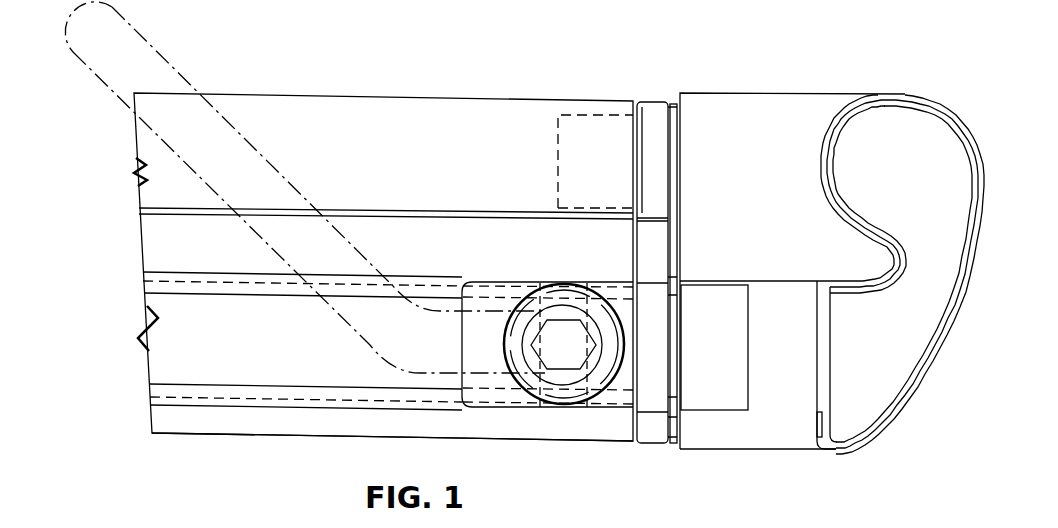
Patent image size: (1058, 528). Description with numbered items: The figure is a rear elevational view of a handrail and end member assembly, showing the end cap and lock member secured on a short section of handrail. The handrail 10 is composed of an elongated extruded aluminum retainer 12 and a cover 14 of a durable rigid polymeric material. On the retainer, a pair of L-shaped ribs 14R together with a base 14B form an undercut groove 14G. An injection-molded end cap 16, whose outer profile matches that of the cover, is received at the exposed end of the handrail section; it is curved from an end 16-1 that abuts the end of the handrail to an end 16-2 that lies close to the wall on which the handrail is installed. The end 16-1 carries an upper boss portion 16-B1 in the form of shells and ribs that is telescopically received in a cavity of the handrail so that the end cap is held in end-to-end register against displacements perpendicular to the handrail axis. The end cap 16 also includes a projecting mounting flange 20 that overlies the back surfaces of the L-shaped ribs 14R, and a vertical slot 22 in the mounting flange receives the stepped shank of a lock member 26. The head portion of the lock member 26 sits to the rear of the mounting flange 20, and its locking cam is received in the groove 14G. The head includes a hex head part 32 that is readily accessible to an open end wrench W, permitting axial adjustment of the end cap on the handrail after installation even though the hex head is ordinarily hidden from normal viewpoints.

The handrail 10 is at (118, 196).
The retainer 12 is at (326, 88).
The cover 14 is at (374, 96).
The L-shaped ribs 14R is at (210, 281).
The base 14B is at (424, 343).
The undercut groove 14G is at (266, 377).
The end cap 16 is at (762, 93).
The end 16-1 is at (657, 100).
The upper boss portion 16-B1 is at (598, 208).
The end 16-2 is at (886, 412).
The mounting flange 20 is at (478, 392).
The vertical slot 22 is at (586, 377).
The lock member 26 is at (630, 373).
The hex head part 32 is at (550, 313).
The open end wrench W is at (148, 18).